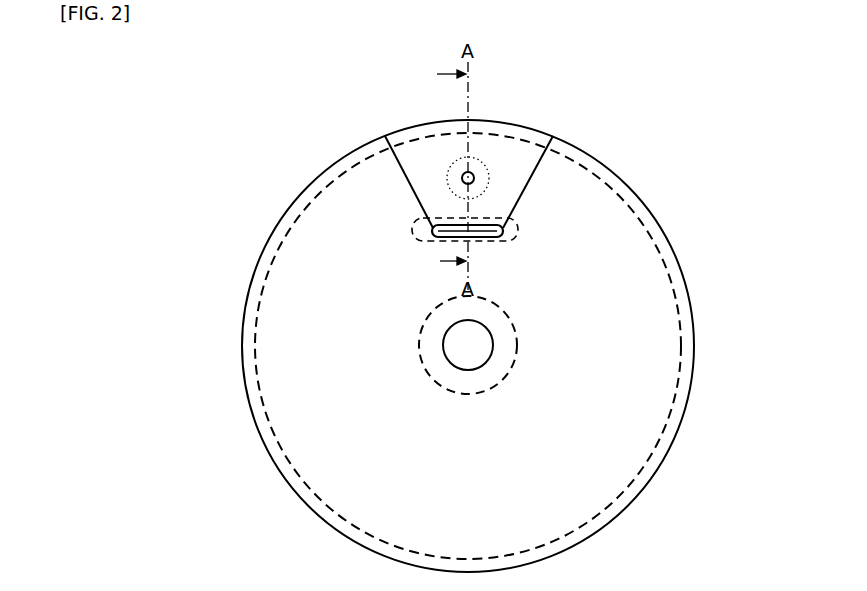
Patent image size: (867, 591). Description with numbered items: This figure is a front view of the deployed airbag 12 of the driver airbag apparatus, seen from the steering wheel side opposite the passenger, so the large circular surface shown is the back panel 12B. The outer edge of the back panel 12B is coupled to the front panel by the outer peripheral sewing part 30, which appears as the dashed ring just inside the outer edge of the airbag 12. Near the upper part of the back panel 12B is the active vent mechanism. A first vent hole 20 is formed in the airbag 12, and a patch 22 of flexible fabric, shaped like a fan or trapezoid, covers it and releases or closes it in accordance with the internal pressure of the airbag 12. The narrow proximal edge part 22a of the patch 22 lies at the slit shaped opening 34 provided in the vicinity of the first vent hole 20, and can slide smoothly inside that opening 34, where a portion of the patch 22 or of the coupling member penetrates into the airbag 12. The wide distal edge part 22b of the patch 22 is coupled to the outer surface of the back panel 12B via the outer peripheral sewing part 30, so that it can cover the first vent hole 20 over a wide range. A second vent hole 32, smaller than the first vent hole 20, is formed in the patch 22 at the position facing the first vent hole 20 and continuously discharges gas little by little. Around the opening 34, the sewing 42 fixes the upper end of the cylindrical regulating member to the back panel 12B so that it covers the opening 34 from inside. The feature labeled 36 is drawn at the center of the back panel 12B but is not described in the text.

The airbag 12 is at (258, 265).
The back panel 12B is at (562, 488).
The outer peripheral sewing part 30 is at (303, 485).
The patch 22 is at (503, 144).
The proximal edge part 22a is at (445, 238).
The distal edge part 22b is at (533, 148).
The first vent hole 20 is at (454, 141).
The second vent hole 32 is at (461, 180).
The slit shaped opening 34 is at (549, 241).
The sewing 42 is at (412, 237).
The through hole 36 is at (493, 345).